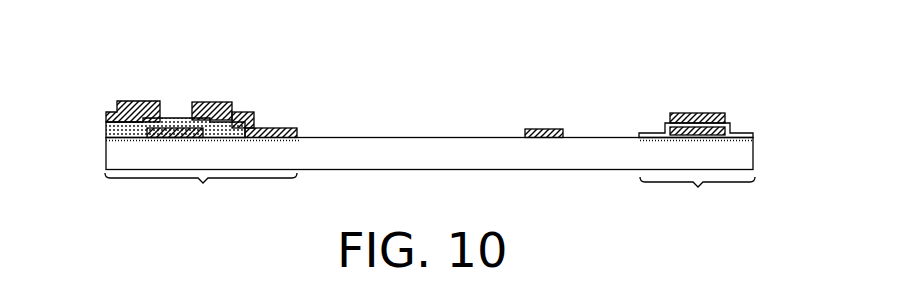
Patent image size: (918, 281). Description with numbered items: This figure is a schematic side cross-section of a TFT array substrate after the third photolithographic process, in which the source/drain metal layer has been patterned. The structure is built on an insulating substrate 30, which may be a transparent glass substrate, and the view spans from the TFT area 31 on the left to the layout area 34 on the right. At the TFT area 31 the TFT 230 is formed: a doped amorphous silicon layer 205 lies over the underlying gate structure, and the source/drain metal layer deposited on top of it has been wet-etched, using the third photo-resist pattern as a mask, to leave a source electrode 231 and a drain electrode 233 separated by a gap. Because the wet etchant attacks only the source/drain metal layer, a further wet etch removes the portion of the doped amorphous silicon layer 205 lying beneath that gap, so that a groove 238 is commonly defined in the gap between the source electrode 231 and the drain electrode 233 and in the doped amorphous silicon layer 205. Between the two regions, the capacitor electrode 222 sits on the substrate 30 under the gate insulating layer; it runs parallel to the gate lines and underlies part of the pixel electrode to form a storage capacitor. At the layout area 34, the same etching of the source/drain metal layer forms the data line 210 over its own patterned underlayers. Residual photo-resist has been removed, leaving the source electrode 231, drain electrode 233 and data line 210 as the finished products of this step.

The insulating substrate 30 is at (740, 157).
The TFT area 31 is at (201, 195).
The layout area 34 is at (697, 197).
The doped amorphous silicon layer 205 is at (153, 118).
The data line 210 is at (705, 115).
The capacitor electrode 222 is at (550, 129).
The TFT 230 is at (234, 90).
The source electrode 231 is at (107, 117).
The drain electrode 233 is at (255, 112).
The groove 238 is at (176, 108).